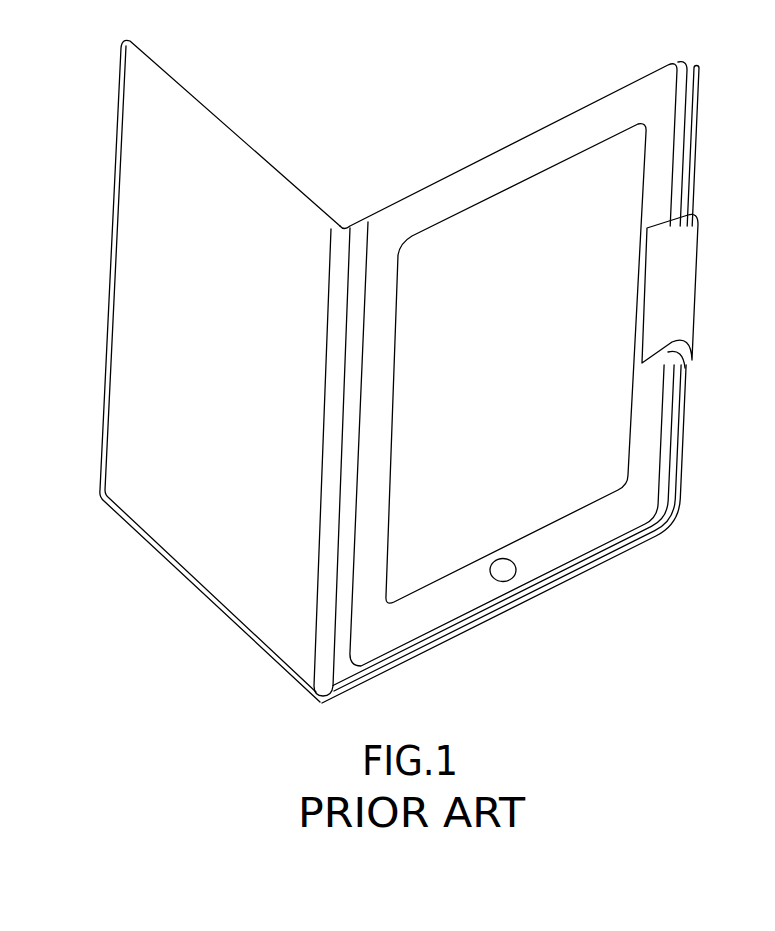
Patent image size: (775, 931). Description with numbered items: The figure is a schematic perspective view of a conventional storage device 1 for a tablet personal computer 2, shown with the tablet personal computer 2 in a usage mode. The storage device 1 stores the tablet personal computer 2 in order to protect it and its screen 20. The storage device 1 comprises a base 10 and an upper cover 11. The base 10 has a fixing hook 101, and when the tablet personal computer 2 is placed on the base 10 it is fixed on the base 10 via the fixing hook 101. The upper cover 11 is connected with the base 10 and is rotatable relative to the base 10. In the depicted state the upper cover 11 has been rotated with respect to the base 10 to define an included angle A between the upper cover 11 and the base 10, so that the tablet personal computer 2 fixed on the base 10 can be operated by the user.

The storage device 1 is at (212, 371).
The tablet personal computer 2 is at (540, 382).
The base 10 is at (416, 371).
The upper cover 11 is at (128, 282).
The screen 20 is at (610, 213).
The fixing hook 101 is at (677, 287).
The included angle A is at (348, 681).